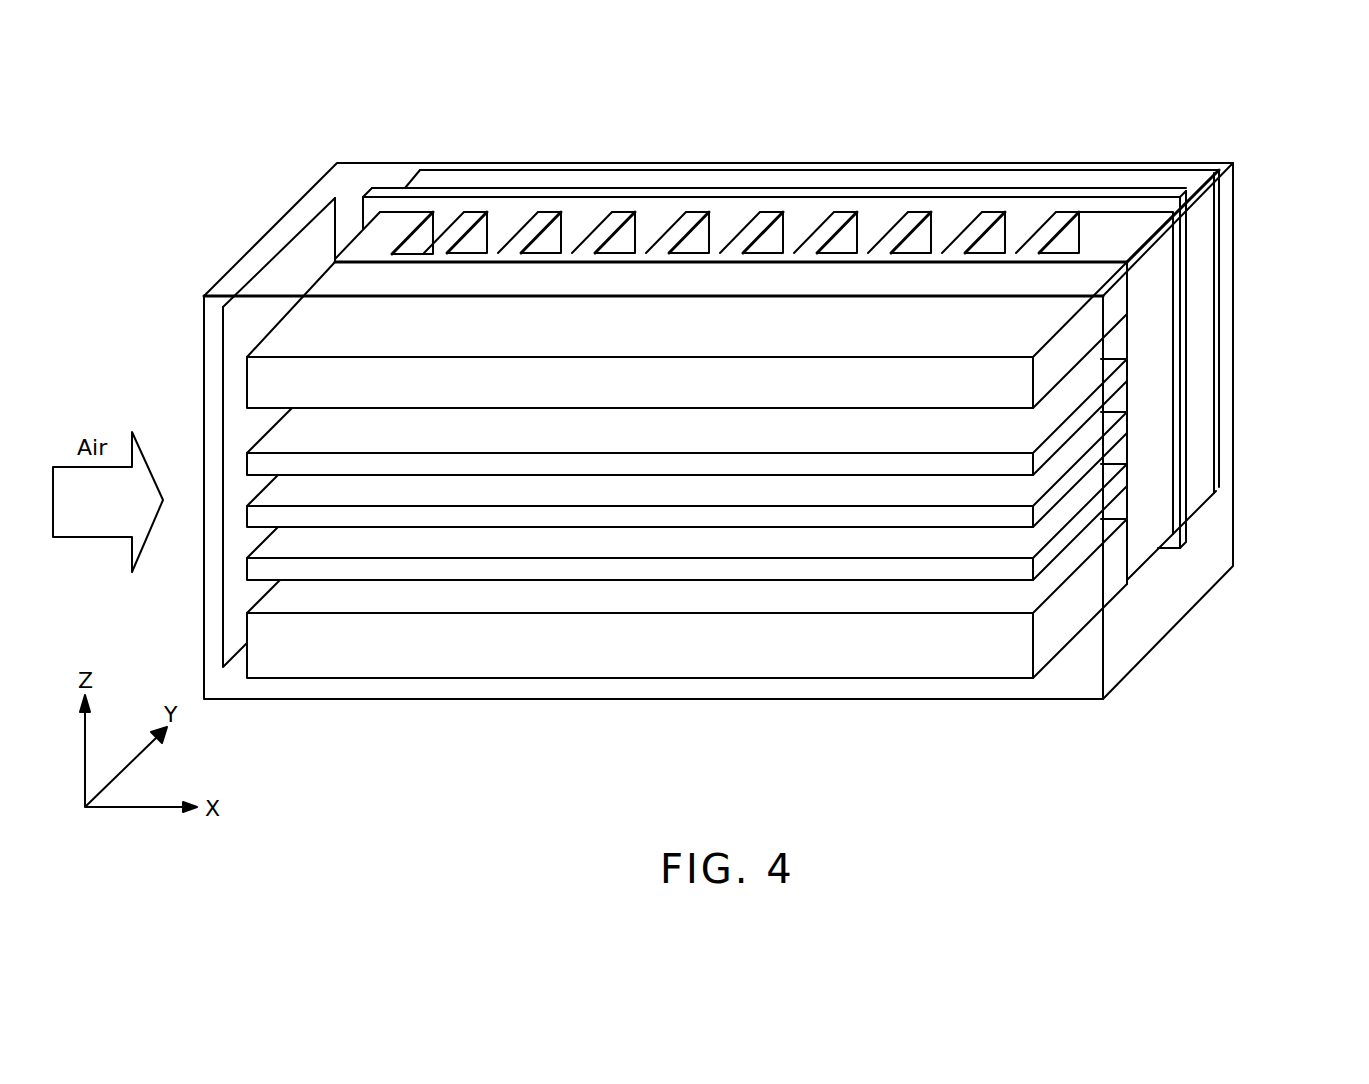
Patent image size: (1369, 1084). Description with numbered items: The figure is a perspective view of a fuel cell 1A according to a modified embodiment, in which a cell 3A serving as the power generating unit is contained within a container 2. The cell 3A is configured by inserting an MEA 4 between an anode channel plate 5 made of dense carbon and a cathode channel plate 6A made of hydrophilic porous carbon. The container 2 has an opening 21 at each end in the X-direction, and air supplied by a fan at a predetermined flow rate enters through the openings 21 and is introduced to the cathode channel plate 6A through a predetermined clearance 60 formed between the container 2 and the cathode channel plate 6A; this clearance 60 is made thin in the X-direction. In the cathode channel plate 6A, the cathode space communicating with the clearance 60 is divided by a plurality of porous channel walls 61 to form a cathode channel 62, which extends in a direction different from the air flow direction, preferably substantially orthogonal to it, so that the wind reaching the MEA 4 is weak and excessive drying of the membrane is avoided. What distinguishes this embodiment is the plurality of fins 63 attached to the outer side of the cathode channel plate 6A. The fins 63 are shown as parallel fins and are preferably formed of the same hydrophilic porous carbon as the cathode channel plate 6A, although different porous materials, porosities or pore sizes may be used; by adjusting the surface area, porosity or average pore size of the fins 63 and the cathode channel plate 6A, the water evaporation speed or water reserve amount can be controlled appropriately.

The fuel cell 1A is at (1327, 257).
The container 2 is at (207, 357).
The opening 21 is at (233, 321).
The cell 3A is at (866, 375).
The MEA 4 is at (1183, 447).
The anode channel plate 5 is at (1277, 491).
The cathode channel plate 6A is at (1157, 479).
The clearance 60 is at (760, 183).
The channel wall 61 is at (692, 218).
The cathode channel 62 is at (572, 213).
The fin 63 is at (257, 464).